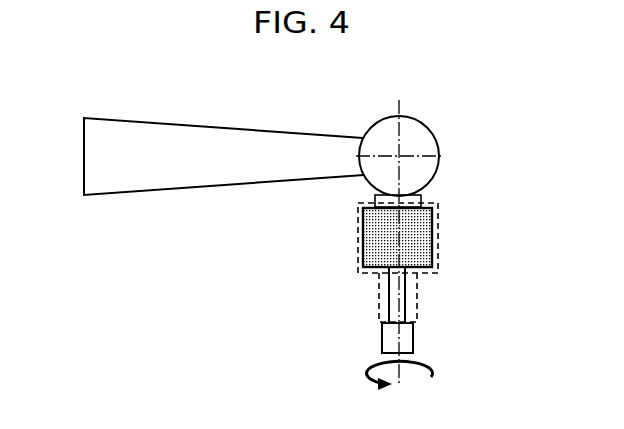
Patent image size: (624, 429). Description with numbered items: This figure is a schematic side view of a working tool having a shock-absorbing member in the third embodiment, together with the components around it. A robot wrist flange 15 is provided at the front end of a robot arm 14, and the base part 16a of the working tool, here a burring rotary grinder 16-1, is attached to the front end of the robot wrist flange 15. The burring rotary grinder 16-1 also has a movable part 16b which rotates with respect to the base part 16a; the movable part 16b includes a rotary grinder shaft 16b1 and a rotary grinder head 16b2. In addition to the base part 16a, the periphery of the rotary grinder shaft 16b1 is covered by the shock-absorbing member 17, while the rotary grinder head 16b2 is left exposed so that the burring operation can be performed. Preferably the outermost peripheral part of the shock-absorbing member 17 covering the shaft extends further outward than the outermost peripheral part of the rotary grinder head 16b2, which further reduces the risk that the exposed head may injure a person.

The robot arm 14 is at (205, 131).
The robot wrist flange 15 is at (430, 185).
The base part 16a is at (445, 203).
The movable part 16b is at (448, 280).
The rotary grinder shaft 16b1 is at (380, 304).
The rotary grinder head 16b2 is at (382, 342).
The burring rotary grinder 16-1 is at (515, 227).
The shock-absorbing member 17 is at (357, 230).